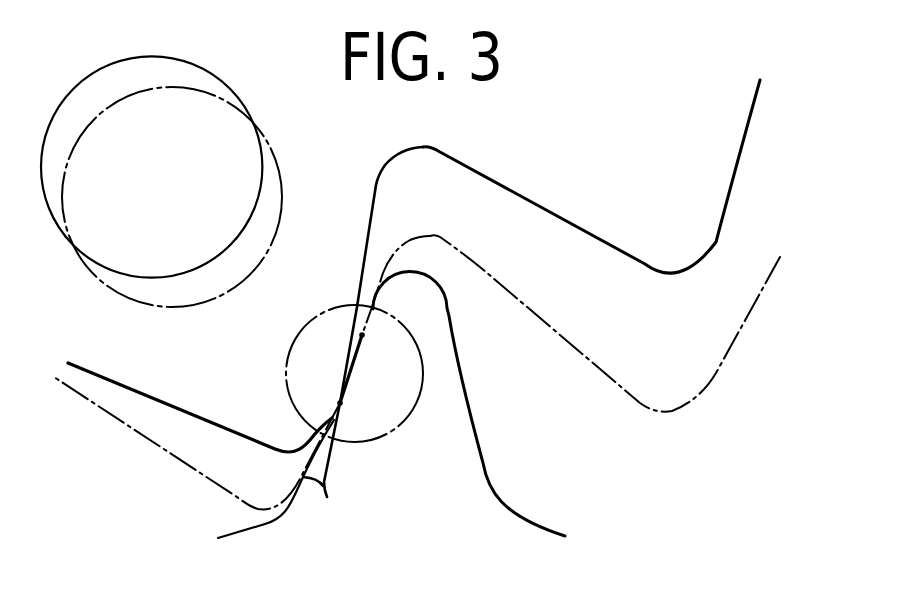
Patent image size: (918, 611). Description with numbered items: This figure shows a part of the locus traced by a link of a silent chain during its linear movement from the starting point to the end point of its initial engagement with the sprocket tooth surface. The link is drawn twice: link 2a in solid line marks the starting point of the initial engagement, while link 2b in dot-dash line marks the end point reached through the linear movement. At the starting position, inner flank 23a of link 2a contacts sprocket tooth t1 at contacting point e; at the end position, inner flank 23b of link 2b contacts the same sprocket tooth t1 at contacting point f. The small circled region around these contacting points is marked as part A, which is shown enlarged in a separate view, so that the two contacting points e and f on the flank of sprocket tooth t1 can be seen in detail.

The link 2a is at (648, 277).
The link 2b is at (652, 432).
The inner flank 23a is at (371, 230).
The inner flank 23b is at (327, 499).
The sprocket tooth t1 is at (472, 452).
The part A is at (382, 440).
The contacting point e is at (350, 415).
The contacting point f is at (369, 340).